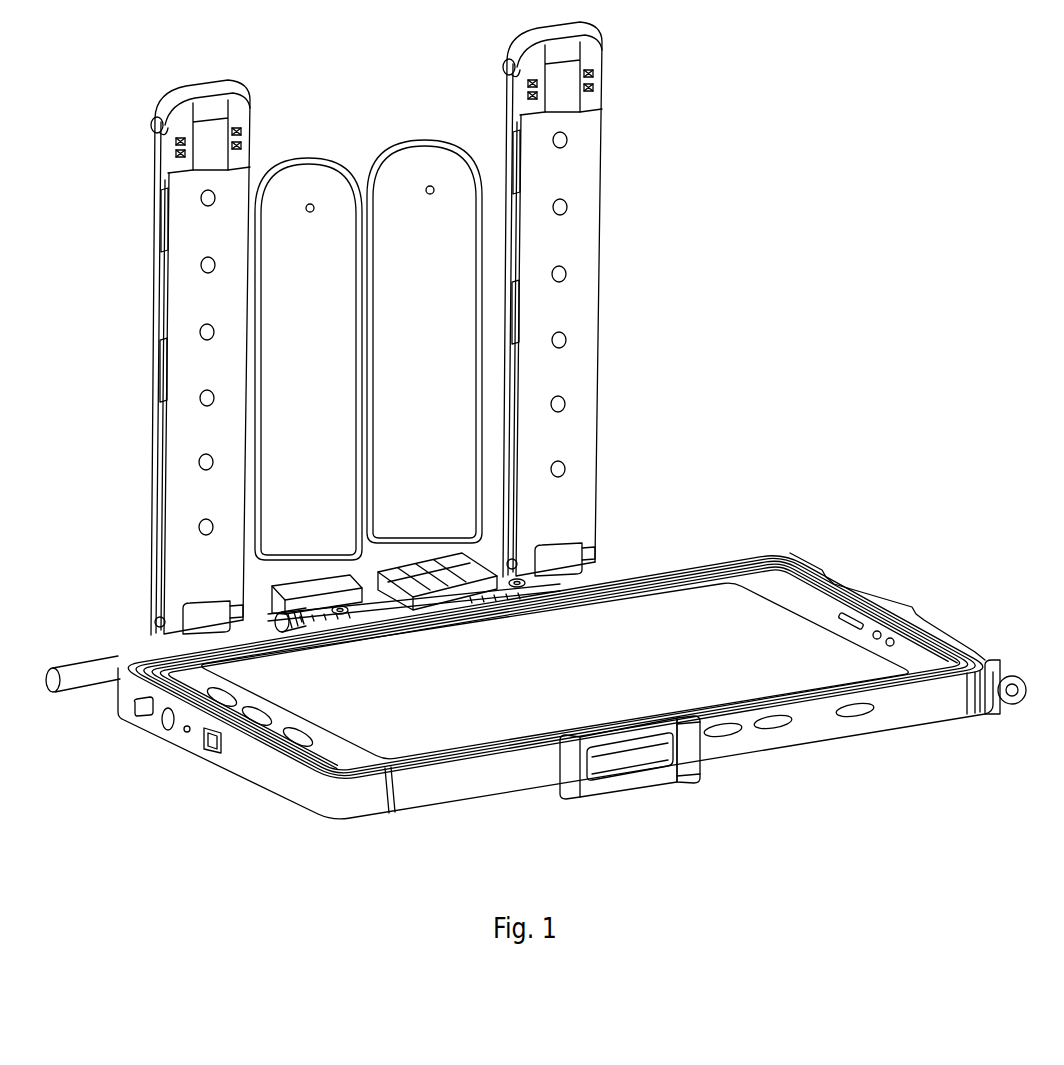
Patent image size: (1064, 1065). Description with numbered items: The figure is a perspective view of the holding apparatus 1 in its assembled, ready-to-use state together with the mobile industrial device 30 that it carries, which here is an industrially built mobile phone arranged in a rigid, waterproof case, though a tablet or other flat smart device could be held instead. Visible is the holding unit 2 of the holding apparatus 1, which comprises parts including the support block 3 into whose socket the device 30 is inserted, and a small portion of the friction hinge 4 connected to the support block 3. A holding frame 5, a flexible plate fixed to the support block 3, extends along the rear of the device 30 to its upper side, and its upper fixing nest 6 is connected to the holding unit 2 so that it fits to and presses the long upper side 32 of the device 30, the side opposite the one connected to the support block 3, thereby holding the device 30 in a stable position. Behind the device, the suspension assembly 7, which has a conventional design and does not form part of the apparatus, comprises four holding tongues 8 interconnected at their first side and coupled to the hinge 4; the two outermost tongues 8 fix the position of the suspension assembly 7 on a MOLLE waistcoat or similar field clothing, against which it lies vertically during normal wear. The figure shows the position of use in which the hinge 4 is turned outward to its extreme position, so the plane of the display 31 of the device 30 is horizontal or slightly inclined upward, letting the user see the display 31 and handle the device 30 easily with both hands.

The holding apparatus 1 is at (572, 651).
The holding unit 2 is at (449, 548).
The support block 3 is at (422, 598).
The friction hinge 4 is at (330, 582).
The holding frame 5 is at (640, 786).
The upper fixing nest 6 is at (702, 760).
The suspension assembly 7 is at (630, 290).
The holding tongues 8 is at (432, 185).
The mobile industrial device 30 is at (457, 735).
The display 31 is at (762, 628).
The upper side 32 is at (945, 706).